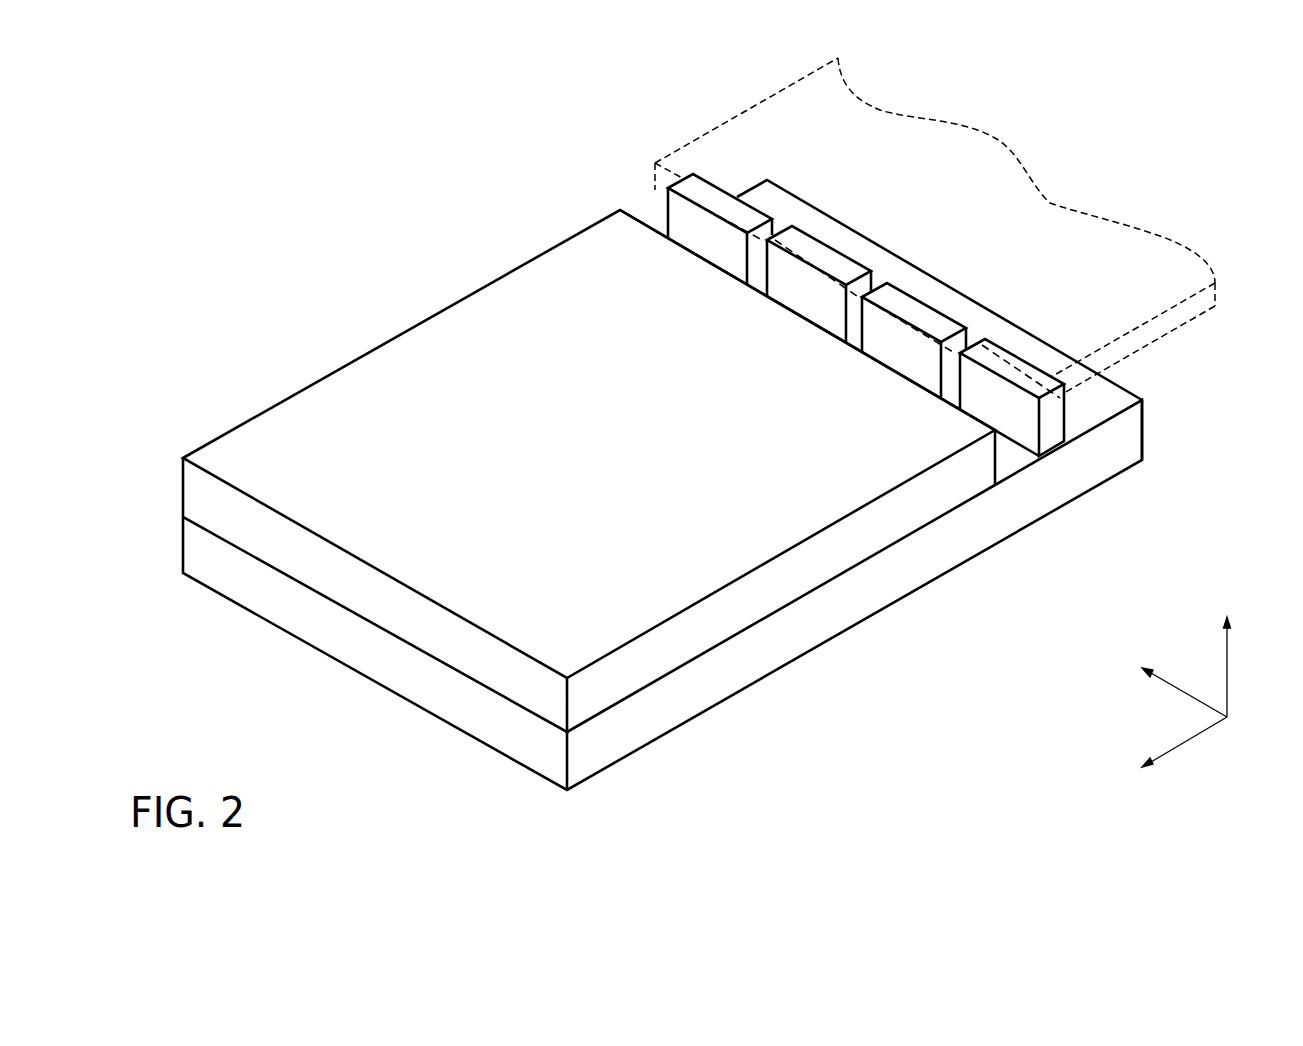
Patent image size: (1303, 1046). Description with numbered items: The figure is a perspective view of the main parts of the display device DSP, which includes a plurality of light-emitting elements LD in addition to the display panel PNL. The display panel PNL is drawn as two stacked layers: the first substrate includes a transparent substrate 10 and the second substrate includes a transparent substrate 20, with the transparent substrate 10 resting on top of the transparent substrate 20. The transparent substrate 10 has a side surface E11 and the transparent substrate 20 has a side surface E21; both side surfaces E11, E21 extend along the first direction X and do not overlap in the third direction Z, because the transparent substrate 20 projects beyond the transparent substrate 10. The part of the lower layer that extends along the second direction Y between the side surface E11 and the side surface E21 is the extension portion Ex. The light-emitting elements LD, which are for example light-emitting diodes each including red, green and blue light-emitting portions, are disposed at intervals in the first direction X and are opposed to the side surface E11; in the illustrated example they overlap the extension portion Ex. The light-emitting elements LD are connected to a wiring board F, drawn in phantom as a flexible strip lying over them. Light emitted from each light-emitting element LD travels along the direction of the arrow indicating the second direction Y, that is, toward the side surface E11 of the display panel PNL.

The display device DSP is at (913, 730).
The display panel PNL is at (728, 700).
The transparent substrate 10 is at (620, 537).
The transparent substrate 20 is at (715, 504).
The side surface E11 is at (1003, 463).
The side surface E21 is at (1148, 408).
The extension portion Ex is at (1096, 402).
The light-emitting element LD is at (1053, 422).
The wiring board F is at (1181, 318).